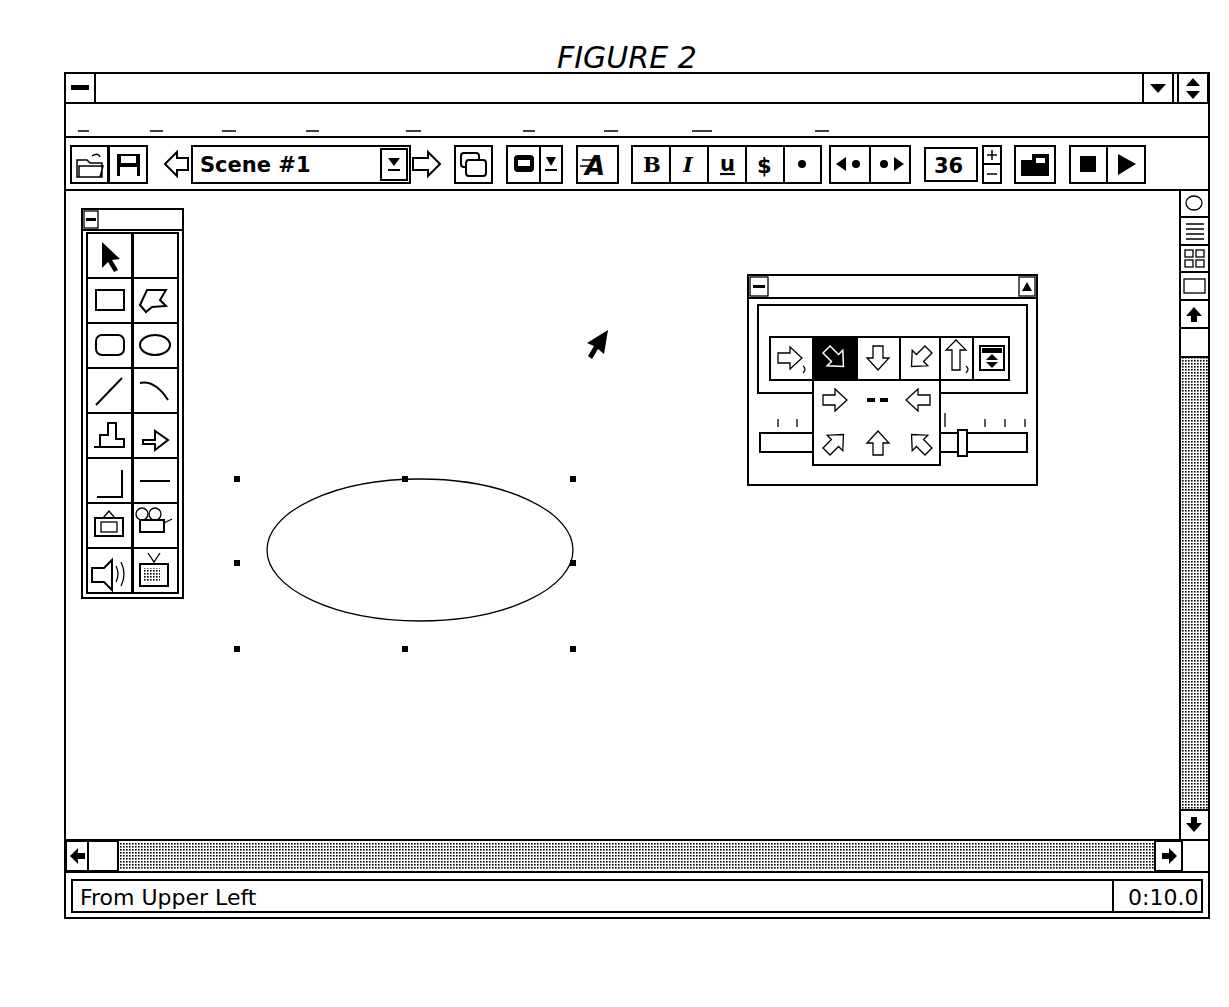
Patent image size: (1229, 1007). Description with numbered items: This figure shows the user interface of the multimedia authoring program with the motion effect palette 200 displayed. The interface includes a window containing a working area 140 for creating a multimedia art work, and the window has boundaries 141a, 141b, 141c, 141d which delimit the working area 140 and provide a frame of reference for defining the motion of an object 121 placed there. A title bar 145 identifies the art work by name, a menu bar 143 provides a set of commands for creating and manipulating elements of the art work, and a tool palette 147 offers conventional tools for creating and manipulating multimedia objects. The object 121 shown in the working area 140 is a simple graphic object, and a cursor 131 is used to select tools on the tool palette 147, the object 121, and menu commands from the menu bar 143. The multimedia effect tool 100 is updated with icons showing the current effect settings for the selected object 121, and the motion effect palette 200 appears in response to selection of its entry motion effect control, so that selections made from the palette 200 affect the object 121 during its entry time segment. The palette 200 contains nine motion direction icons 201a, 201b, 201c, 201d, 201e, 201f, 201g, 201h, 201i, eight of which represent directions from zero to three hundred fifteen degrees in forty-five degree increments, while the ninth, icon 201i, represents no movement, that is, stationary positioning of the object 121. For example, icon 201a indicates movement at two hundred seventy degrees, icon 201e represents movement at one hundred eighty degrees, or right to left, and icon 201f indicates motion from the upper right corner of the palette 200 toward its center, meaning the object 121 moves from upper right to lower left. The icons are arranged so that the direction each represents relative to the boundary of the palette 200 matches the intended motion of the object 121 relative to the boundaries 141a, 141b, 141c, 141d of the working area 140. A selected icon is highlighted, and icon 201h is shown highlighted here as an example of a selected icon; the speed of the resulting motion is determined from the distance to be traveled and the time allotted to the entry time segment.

The multimedia effect tool 100 is at (891, 385).
The object 121 is at (438, 503).
The cursor 131 is at (584, 343).
The working area 140 is at (438, 308).
The boundary 141a is at (66, 702).
The boundary 141b is at (622, 844).
The boundary 141c is at (1180, 690).
The boundary 141d is at (1150, 191).
The menu bar 143 is at (921, 130).
The title bar 145 is at (818, 99).
The tool palette 147 is at (184, 272).
The motion effect palette 200 is at (891, 385).
The motion direction icon 201a is at (818, 400).
The motion direction icon 201b is at (838, 458).
The motion direction icon 201c is at (877, 462).
The motion direction icon 201d is at (925, 458).
The motion direction icon 201e is at (932, 395).
The motion direction icon 201f is at (922, 345).
The motion direction icon 201g is at (873, 345).
The motion direction icon 201h is at (849, 345).
The motion direction icon 201i is at (880, 407).